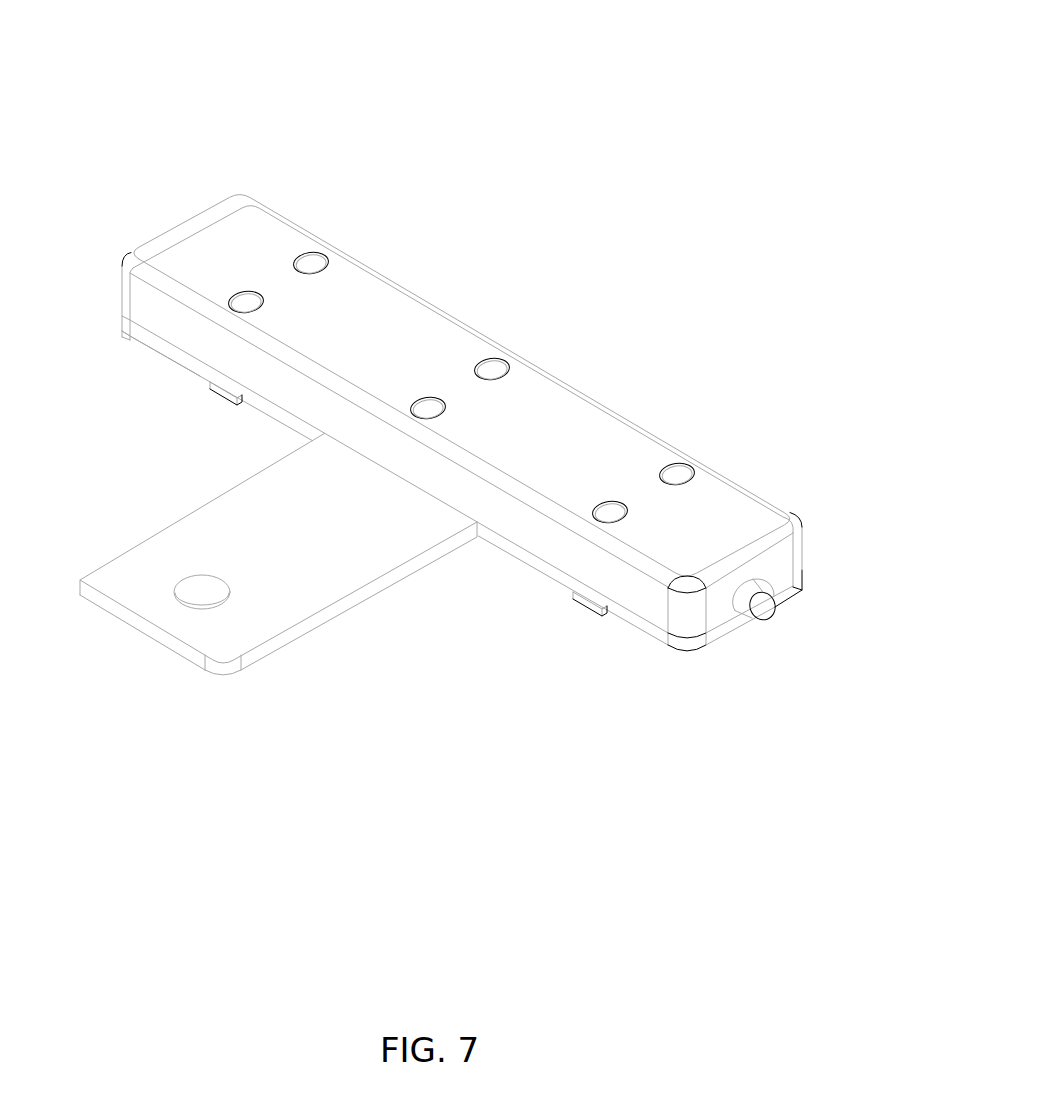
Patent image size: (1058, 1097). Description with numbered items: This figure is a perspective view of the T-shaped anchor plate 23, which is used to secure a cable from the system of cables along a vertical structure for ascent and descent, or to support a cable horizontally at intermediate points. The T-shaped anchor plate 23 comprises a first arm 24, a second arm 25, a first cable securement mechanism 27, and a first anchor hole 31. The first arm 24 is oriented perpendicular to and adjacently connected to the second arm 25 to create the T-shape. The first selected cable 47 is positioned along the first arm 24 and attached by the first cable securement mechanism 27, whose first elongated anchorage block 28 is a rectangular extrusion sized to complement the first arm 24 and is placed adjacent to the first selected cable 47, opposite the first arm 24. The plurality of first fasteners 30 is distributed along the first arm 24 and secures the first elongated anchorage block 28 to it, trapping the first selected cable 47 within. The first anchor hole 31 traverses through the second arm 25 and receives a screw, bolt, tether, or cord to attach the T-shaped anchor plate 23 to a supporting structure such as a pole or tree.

The T-shaped anchor plate 23 is at (599, 100).
The first cable securement mechanism 27 is at (148, 202).
The first elongated anchorage block 28 is at (415, 311).
The plurality of first fasteners 30 is at (238, 298).
The first arm 24 is at (147, 341).
The second arm 25 is at (96, 582).
The first anchor hole 31 is at (206, 592).
The first selected cable 47 is at (763, 606).